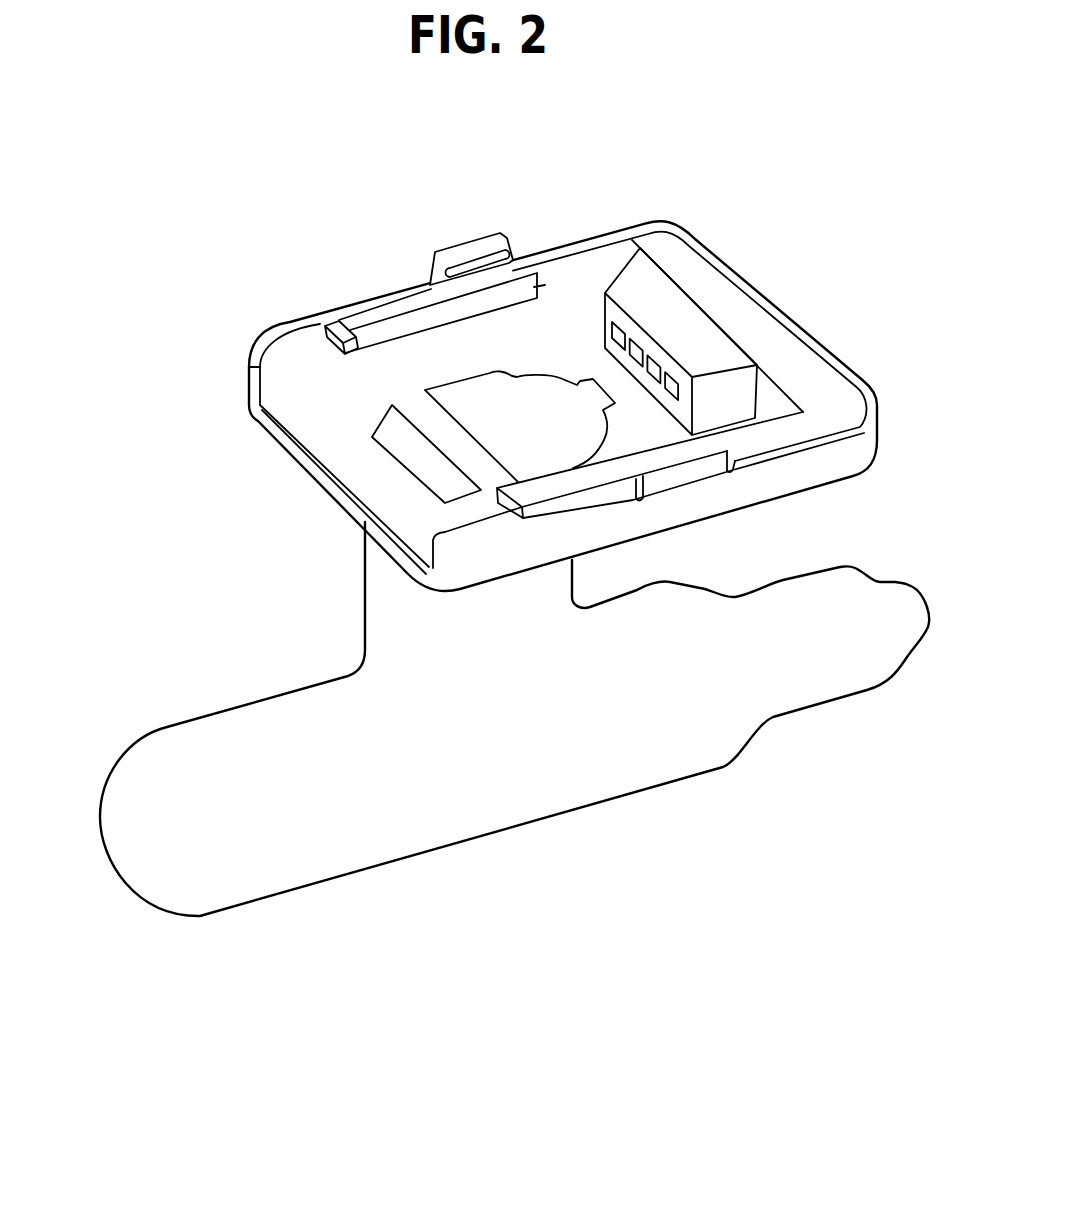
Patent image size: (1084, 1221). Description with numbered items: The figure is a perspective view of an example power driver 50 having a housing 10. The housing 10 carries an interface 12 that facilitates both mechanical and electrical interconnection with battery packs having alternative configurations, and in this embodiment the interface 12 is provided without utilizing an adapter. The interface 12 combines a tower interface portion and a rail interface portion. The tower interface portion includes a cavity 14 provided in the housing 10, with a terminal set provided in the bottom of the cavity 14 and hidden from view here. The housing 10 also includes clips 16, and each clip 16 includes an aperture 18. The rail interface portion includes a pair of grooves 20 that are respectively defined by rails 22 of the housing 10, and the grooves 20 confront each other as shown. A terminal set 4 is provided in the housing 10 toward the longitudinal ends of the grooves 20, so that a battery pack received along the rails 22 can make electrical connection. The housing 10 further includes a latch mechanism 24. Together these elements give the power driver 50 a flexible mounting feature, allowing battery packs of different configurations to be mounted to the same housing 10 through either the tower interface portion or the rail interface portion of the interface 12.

The terminal set 4 is at (650, 332).
The housing 10 is at (647, 795).
The interface 12 is at (710, 205).
The cavity 14 is at (543, 373).
The clip 16 is at (443, 251).
The aperture 18 is at (485, 238).
The groove 20 is at (292, 330).
The rail 22 is at (368, 332).
The latch mechanism 24 is at (380, 423).
The power driver 50 is at (499, 761).